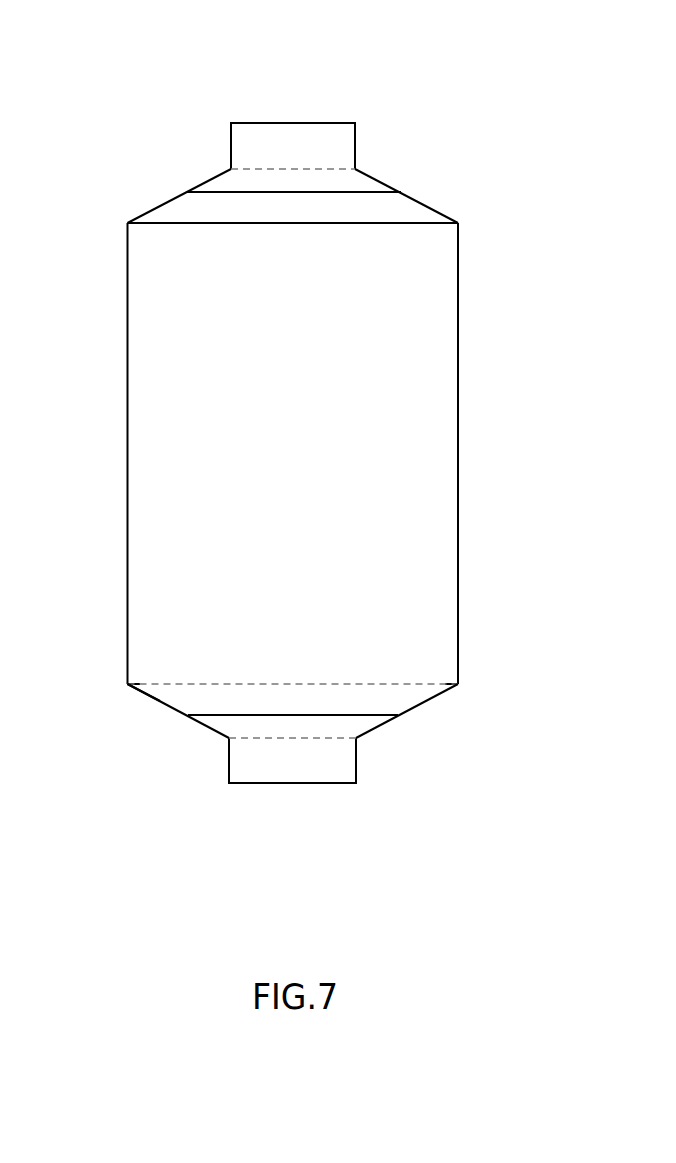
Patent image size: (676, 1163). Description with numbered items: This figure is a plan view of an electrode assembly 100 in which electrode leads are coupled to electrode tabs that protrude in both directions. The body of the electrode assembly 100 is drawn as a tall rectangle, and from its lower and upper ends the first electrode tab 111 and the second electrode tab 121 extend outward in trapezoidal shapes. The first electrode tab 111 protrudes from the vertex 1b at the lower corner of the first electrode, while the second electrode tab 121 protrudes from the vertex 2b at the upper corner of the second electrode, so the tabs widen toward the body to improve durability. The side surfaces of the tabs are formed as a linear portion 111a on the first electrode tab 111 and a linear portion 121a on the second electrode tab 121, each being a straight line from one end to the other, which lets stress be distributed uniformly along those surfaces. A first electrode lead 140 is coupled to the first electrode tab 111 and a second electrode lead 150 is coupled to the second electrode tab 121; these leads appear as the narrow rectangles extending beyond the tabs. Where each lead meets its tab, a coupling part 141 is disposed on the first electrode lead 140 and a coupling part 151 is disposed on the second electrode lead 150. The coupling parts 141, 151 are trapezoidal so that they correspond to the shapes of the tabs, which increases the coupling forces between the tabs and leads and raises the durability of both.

The electrode assembly 100 is at (296, 423).
The second electrode lead 150 is at (294, 132).
The coupling part 151 is at (366, 187).
The second electrode tab 121 is at (327, 173).
The linear portion 121a is at (435, 210).
The vertex 2b is at (458, 223).
The vertex 1b is at (458, 684).
The first electrode tab 111 is at (268, 741).
The linear portion 111a is at (156, 702).
The coupling part 141 is at (360, 718).
The first electrode lead 140 is at (296, 765).